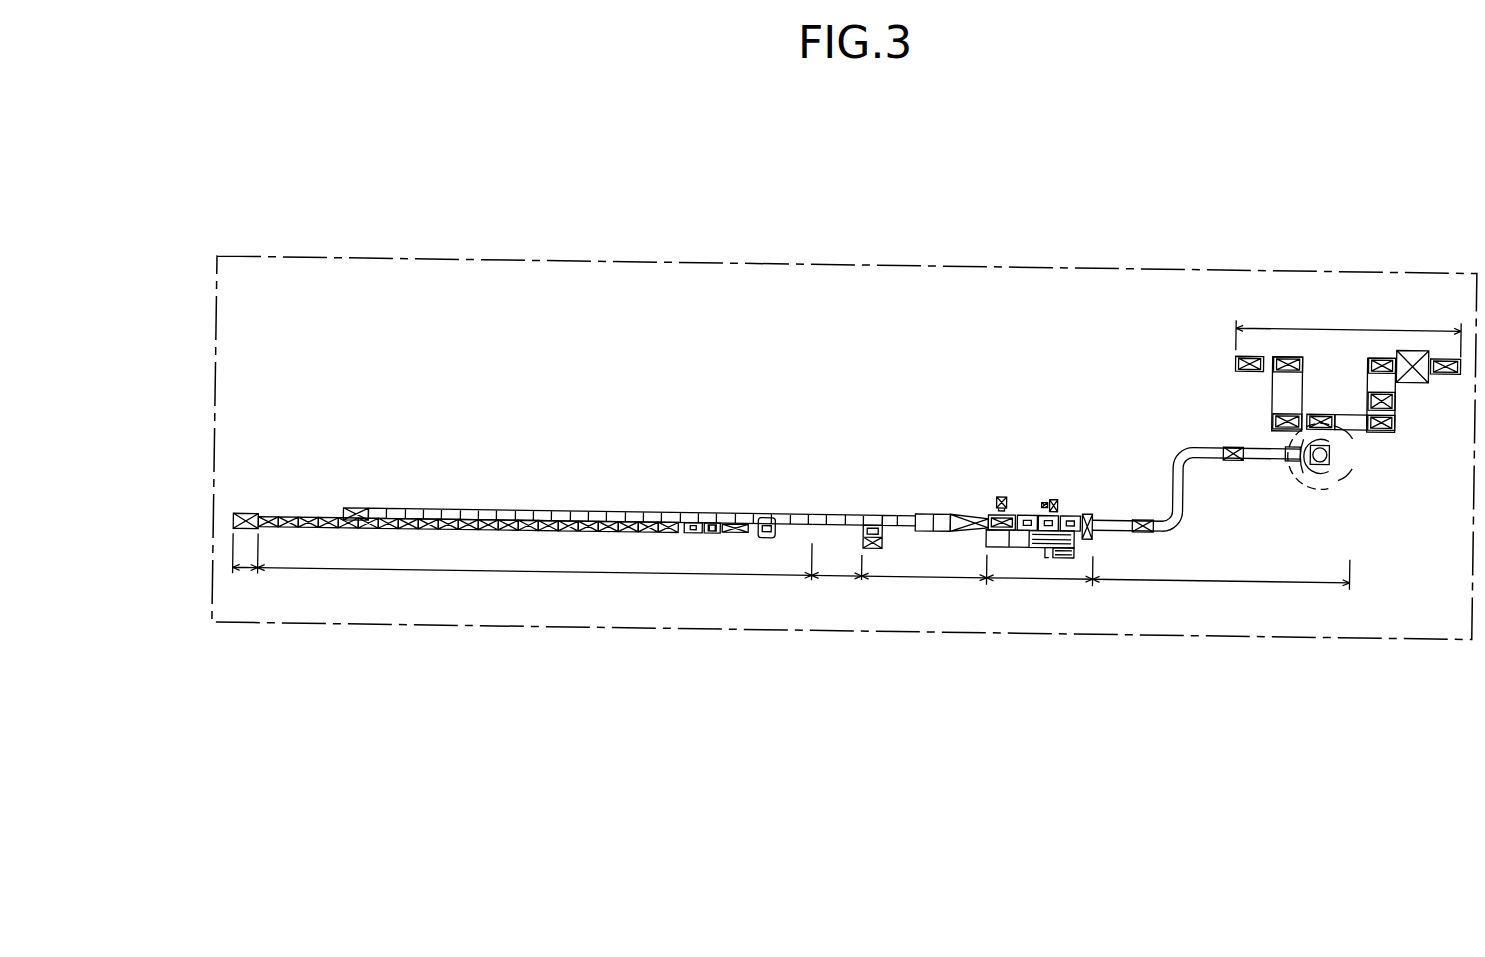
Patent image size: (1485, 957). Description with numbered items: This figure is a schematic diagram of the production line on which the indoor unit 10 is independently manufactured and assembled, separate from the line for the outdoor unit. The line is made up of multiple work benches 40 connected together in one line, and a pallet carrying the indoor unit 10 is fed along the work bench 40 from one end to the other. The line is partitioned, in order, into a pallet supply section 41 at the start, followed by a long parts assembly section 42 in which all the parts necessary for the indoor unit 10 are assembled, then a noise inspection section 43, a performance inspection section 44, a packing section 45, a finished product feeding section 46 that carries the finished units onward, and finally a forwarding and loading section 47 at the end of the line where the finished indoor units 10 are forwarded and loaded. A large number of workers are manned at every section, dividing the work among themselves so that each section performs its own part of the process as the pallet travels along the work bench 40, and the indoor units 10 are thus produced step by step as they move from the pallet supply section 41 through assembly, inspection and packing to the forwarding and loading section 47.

The work bench 40 is at (217, 442).
The pallet supply section 41 is at (259, 571).
The parts assembly section 42 is at (534, 568).
The noise inspection section 43 is at (839, 568).
The performance inspection section 44 is at (929, 568).
The packing section 45 is at (1027, 568).
The finished product feeding section 46 is at (1234, 568).
The forwarding and loading section 47 is at (1348, 388).
The indoor unit 10 is at (1388, 415).